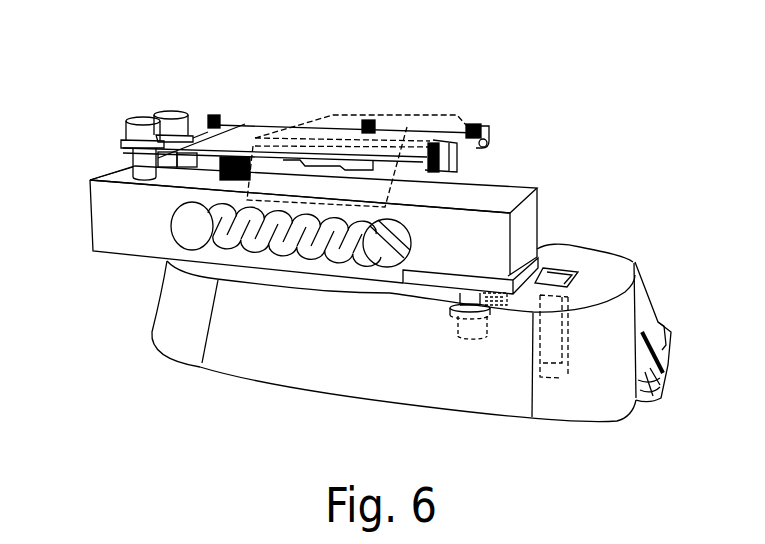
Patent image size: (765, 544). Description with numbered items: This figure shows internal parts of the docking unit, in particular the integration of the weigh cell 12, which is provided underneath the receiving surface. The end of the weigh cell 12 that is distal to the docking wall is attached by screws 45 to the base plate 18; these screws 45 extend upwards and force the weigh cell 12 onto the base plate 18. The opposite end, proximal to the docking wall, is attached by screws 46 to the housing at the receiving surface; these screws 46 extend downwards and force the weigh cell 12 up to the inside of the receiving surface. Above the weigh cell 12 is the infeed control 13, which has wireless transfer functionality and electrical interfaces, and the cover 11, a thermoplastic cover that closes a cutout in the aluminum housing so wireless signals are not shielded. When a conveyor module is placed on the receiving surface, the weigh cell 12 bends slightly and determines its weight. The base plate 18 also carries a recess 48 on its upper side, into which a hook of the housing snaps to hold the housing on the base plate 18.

The cover 11 is at (407, 127).
The weigh cell 12 is at (127, 230).
The infeed control 13 is at (250, 133).
The base plate 18 is at (247, 350).
The screws 45 is at (468, 328).
The screws 46 is at (143, 127).
The recess 48 is at (567, 295).